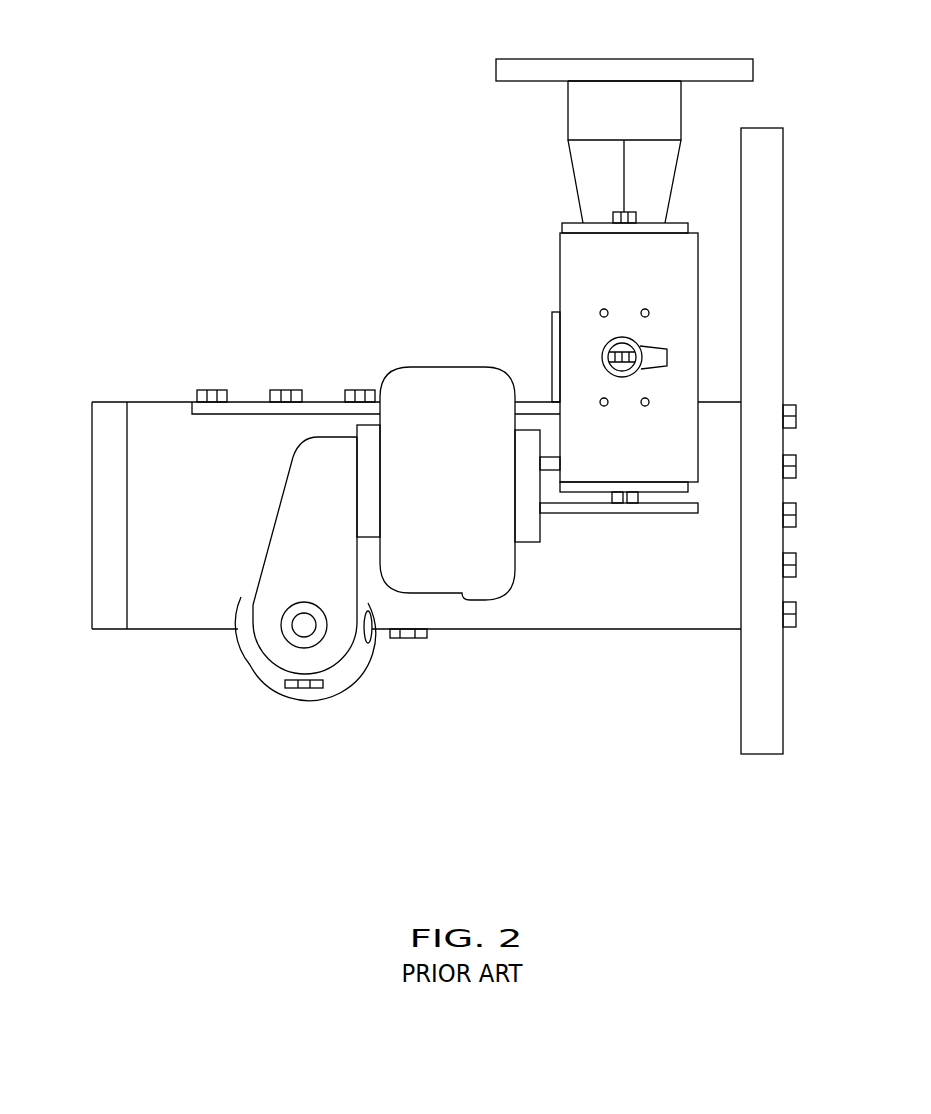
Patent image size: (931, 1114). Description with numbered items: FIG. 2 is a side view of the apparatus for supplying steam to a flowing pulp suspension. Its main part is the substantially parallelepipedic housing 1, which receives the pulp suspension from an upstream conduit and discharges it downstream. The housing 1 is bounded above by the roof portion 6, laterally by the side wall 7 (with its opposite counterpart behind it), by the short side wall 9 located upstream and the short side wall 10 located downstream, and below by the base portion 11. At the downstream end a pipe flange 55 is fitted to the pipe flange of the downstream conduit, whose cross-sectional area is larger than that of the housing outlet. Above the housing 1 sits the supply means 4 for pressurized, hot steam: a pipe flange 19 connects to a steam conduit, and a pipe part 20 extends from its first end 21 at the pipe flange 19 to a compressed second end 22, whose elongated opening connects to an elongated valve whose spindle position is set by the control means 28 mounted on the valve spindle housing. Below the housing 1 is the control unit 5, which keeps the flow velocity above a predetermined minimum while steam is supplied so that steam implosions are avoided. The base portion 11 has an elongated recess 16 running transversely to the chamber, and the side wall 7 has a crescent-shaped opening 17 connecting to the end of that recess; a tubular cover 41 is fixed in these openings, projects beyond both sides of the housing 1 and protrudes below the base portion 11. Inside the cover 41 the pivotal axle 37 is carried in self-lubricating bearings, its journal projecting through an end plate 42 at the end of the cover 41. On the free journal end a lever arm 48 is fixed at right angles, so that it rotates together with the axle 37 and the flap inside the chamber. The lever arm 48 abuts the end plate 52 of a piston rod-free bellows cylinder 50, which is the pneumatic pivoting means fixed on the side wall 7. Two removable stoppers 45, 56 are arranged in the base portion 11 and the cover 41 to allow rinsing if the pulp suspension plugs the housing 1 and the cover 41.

The housing 1 is at (76, 406).
The supply means 4 is at (731, 43).
The control unit 5 is at (261, 676).
The roof portion 6 is at (188, 402).
The side wall 7 is at (150, 482).
The short side wall 9 is at (105, 585).
The short side wall 10 is at (765, 550).
The base portion 11 is at (557, 632).
The elongated recess 16 is at (238, 628).
The crescent-shaped opening 17 is at (363, 637).
The pipe flange 19 is at (497, 72).
The pipe part 20 is at (583, 118).
The first end 21 is at (645, 83).
The second end 22 is at (600, 222).
The control means 28 is at (580, 253).
The pivotal axle 37 is at (317, 637).
The tubular cover 41 is at (247, 600).
The end plate 42 is at (337, 674).
The removable stopper 45 is at (408, 640).
The lever arm 48 is at (310, 455).
The pneumatic cylinder 50 is at (445, 438).
The end plate 52 is at (368, 490).
The pipe flange 55 is at (765, 178).
The removable stopper 56 is at (303, 690).